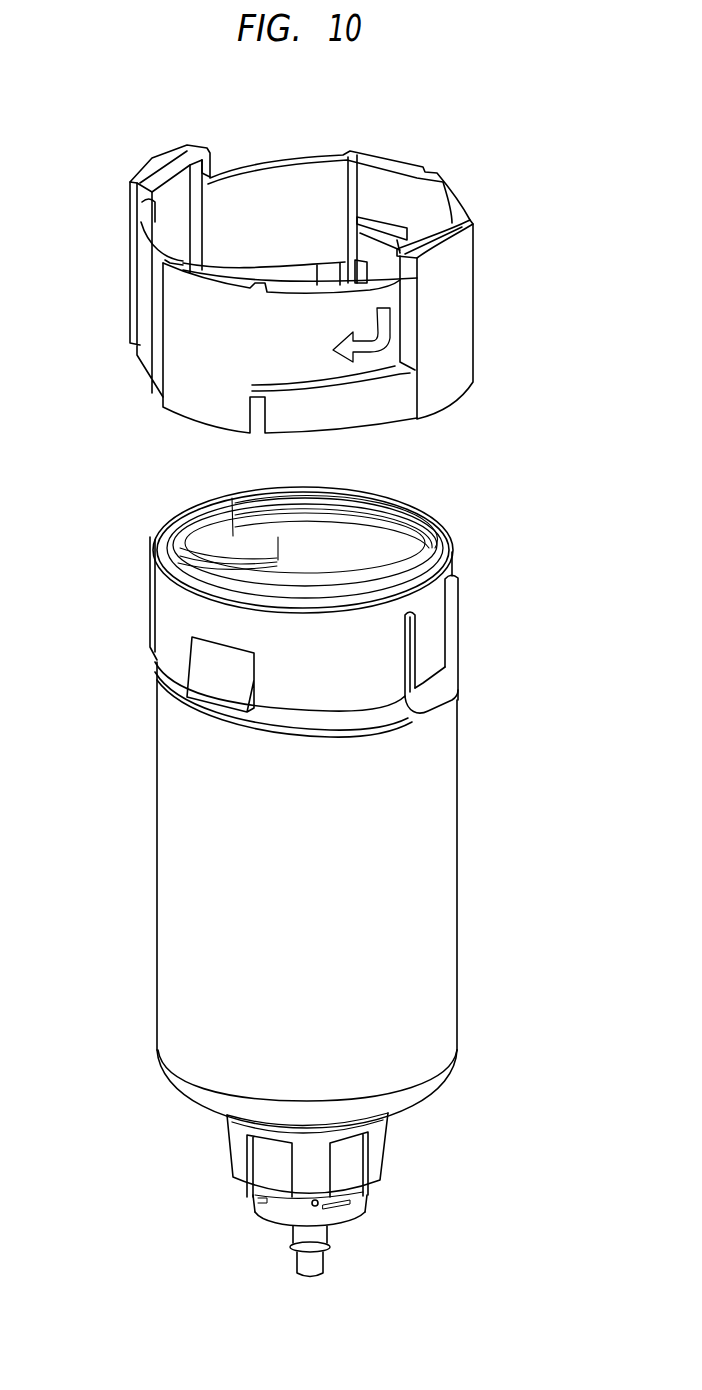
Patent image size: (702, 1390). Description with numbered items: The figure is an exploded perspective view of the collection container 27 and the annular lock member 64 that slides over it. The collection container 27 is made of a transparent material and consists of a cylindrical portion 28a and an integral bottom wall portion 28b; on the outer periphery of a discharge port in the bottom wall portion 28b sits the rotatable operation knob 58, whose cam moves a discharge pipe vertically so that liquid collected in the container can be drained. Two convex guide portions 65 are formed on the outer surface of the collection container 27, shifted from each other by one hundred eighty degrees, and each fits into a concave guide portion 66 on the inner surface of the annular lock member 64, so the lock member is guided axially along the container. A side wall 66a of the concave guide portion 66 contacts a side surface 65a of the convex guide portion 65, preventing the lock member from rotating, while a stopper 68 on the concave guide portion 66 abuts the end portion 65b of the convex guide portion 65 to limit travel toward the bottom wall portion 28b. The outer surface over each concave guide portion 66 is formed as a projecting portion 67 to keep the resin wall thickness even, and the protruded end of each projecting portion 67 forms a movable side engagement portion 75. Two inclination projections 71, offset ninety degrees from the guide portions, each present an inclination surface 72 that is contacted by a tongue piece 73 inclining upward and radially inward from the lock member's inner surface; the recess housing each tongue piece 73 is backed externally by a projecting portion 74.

The annular lock member 64 is at (483, 198).
The concave guide portion 66 is at (182, 222).
The side wall 66a is at (197, 227).
The projecting portion 67 is at (130, 262).
The stopper 68 is at (170, 217).
The tongue piece 73 is at (375, 250).
The projecting portion 74 is at (185, 373).
The movable side engagement portion 75 is at (157, 156).
The collection container 27 is at (392, 829).
The cylindrical portion 28a is at (380, 915).
The bottom wall portion 28b is at (407, 1093).
The operation knob 58 is at (237, 1163).
The convex guide portion 65 is at (150, 597).
The side surface 65a is at (412, 677).
The end portion 65b is at (457, 574).
The inclination projection 71 is at (157, 697).
The inclination surface 72 is at (217, 670).